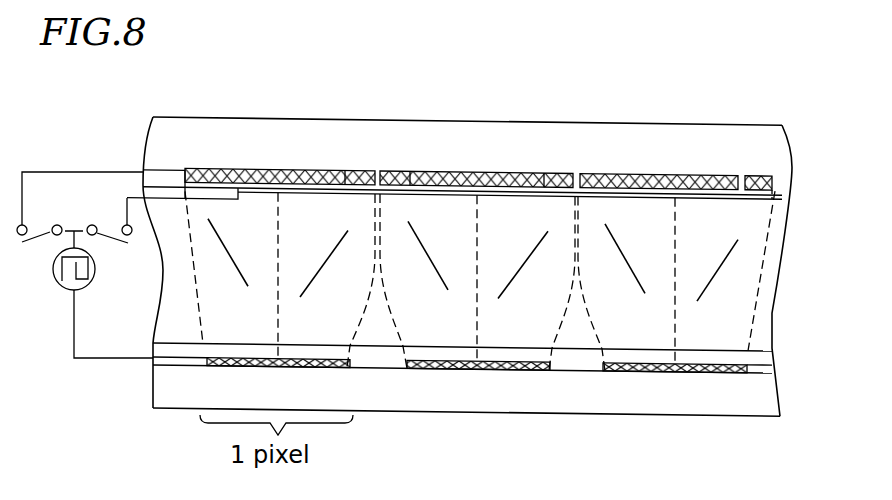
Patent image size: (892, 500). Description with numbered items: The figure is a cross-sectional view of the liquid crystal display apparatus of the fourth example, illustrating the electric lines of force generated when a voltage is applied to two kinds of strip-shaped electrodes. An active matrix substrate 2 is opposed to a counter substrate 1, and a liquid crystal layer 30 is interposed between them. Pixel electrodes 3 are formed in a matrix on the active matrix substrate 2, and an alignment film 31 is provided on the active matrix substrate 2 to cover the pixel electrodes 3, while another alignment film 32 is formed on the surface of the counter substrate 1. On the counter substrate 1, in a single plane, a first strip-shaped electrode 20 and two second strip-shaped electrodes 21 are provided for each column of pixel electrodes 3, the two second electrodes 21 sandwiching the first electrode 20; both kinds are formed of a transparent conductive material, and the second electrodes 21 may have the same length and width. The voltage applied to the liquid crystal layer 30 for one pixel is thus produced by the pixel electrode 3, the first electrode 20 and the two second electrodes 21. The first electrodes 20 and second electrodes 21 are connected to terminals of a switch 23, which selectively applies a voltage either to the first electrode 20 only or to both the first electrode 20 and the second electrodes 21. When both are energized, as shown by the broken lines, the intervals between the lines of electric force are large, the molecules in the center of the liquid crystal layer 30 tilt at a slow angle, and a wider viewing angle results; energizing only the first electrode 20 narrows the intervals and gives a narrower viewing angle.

The counter substrate 1 is at (478, 142).
The active matrix substrate 2 is at (527, 412).
The pixel electrode 3 is at (535, 367).
The first strip-shaped electrode 20 is at (278, 170).
The second strip-shaped electrode 21 is at (198, 168).
The switch 23 is at (62, 288).
The liquid crystal layer 30 is at (168, 308).
The alignment film 31 is at (760, 365).
The alignment film 32 is at (778, 172).